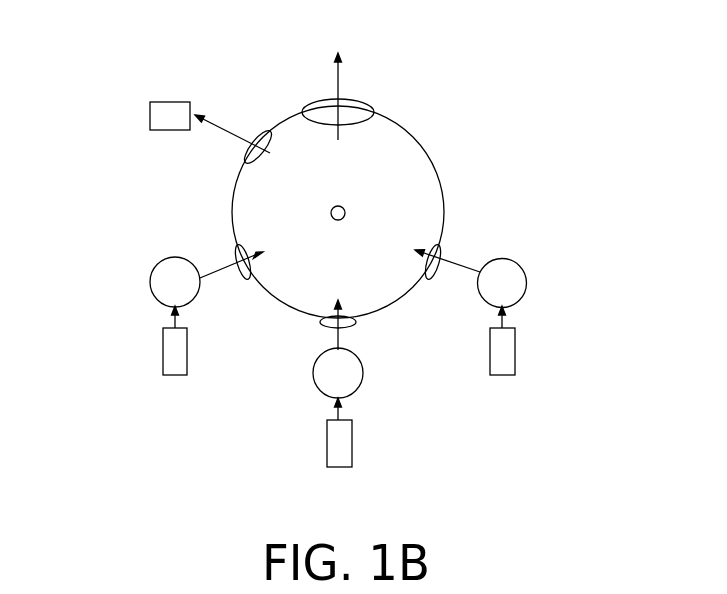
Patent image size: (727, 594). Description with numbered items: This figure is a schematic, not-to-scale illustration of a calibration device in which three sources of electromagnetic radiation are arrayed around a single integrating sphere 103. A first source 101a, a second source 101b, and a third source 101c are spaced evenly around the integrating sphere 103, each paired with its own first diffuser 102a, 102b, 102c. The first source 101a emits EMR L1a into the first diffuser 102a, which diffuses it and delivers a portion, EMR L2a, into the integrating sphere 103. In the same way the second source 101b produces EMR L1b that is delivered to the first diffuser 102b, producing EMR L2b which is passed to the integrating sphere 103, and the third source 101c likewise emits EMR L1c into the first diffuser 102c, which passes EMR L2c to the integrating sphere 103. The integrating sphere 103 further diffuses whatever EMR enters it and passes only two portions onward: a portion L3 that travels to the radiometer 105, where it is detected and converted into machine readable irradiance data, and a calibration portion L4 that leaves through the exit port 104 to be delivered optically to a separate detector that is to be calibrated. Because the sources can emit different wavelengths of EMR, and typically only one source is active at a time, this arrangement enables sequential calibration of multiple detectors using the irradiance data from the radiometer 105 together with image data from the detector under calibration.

The first source 101a is at (516, 342).
The second source 101b is at (327, 443).
The third source 101c is at (163, 352).
The first diffuser 102a is at (527, 280).
The first diffuser 102b is at (313, 379).
The first diffuser 102c is at (150, 289).
The integrating sphere 103 is at (413, 138).
The exit port 104 is at (363, 100).
The radiometer 105 is at (150, 118).
The EMR L1a is at (498, 320).
The EMR L1b is at (343, 412).
The light beam L1c is at (172, 320).
The EMR L2a is at (479, 267).
The EMR L2b is at (343, 338).
The light beam L2c is at (224, 266).
The portion of EMR L3 is at (213, 120).
The calibration portion of EMR L4 is at (334, 70).